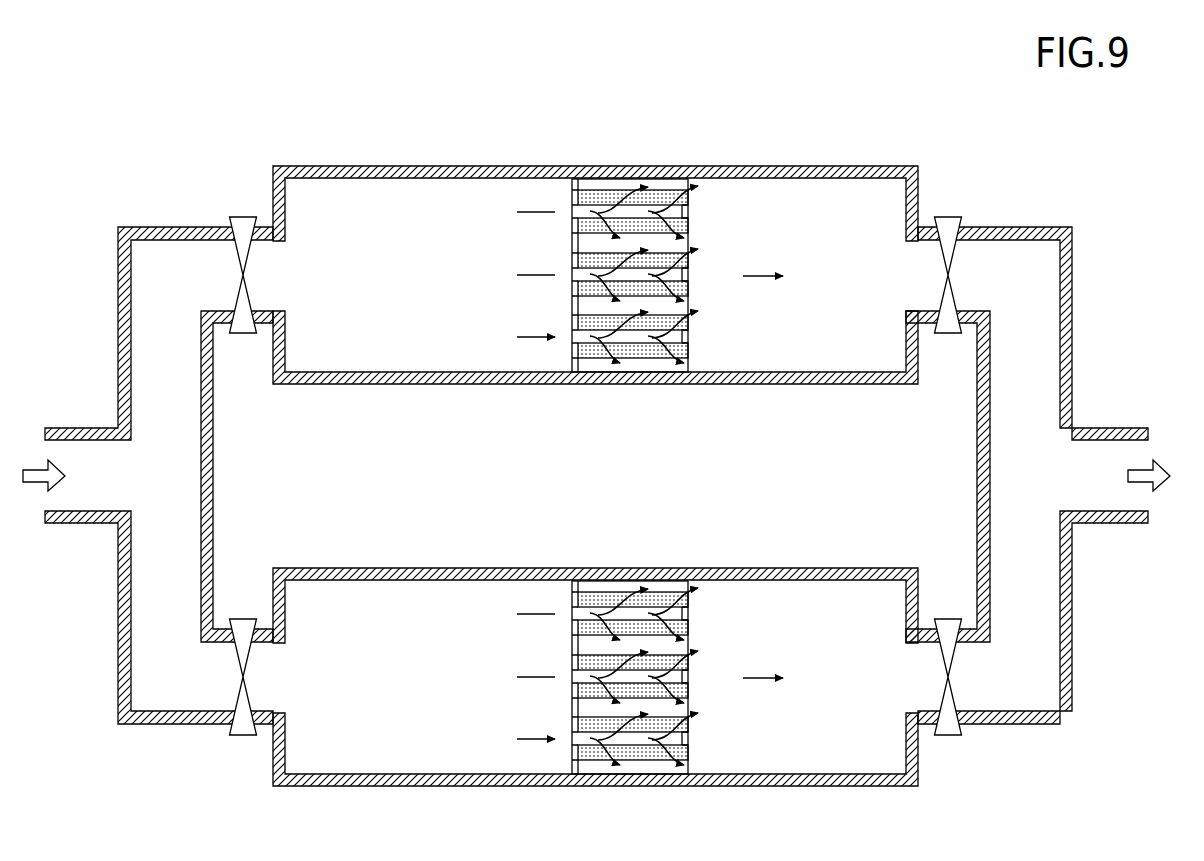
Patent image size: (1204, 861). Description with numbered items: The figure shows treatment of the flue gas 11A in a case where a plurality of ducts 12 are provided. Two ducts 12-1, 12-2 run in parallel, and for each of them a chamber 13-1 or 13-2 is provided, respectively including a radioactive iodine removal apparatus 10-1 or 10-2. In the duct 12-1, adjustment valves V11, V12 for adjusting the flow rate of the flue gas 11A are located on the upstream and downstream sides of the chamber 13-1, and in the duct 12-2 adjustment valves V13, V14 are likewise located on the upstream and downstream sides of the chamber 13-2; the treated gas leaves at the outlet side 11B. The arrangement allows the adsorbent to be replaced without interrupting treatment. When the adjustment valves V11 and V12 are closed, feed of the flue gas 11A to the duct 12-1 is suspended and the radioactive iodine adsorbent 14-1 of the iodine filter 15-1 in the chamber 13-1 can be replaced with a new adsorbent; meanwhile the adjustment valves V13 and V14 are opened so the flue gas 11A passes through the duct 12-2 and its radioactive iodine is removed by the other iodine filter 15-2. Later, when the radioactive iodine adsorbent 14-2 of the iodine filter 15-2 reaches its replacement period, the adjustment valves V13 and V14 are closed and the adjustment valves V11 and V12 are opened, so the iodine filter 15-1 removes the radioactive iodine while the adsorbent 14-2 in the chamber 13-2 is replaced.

The radioactive iodine removal apparatus 10-1 is at (558, 104).
The radioactive iodine removal apparatus 10-2 is at (558, 506).
The flue gas 11A is at (31, 468).
The gas outlet side (outflow gas) 11B is at (1150, 468).
The duct 12 is at (86, 428).
The duct 12-1 is at (159, 227).
The duct 12-2 is at (162, 724).
The chamber 13-1 is at (441, 166).
The chamber 13-2 is at (441, 568).
The radioactive iodine adsorbent 14-1 is at (617, 195).
The radioactive iodine adsorbent 14-2 is at (617, 597).
The iodine filter 15-1 is at (670, 185).
The iodine filter 15-2 is at (670, 587).
The adjustment valve V11 is at (240, 217).
The adjustment valve V12 is at (945, 218).
The adjustment valve V13 is at (243, 735).
The adjustment valve V14 is at (948, 735).